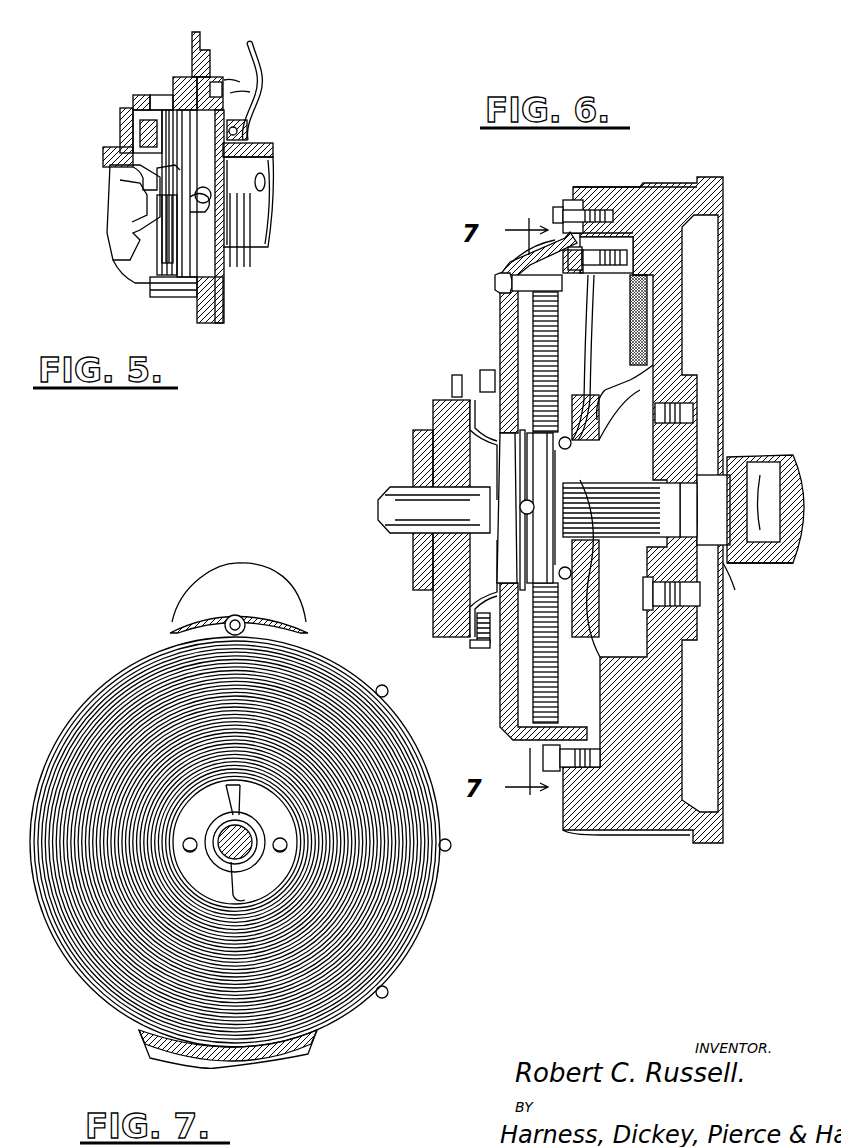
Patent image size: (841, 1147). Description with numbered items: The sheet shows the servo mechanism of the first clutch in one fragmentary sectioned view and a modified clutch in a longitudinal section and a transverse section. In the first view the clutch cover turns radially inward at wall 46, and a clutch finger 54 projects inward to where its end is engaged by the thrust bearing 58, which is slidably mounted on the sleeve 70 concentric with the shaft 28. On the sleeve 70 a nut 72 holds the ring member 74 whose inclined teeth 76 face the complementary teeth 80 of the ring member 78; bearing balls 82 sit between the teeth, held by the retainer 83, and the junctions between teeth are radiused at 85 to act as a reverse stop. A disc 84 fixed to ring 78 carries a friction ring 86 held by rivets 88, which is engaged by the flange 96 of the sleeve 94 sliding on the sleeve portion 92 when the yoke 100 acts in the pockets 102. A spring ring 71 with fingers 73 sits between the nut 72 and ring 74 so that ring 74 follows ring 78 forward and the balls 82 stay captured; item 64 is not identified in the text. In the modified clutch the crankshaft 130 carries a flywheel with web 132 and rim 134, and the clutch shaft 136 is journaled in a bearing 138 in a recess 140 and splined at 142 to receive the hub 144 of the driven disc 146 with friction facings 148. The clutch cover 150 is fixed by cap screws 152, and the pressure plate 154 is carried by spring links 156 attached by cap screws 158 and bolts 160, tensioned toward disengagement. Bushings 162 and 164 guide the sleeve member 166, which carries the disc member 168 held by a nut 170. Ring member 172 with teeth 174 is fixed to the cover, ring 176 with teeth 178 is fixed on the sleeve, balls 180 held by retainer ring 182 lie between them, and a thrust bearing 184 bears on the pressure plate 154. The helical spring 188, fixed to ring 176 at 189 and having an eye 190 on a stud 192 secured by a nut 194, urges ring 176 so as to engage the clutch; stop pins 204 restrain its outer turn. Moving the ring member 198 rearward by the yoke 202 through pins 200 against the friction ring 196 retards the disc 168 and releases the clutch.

In FIG. 5, the shaft 28 is at (264, 183).
In FIG. 5, the radially inward wall of clutch cover 46 is at (192, 43).
In FIG. 5, the clutch finger 54 is at (260, 50).
In FIG. 5, the thrust bearing 58 is at (240, 137).
In FIG. 5, the pin 64 is at (227, 80).
In FIG. 5, the sleeve 70 is at (260, 150).
In FIG. 5, the spring ring 71 is at (117, 152).
In FIG. 5, the nut 72 is at (143, 130).
In FIG. 5, the spring fingers 73 is at (163, 110).
In FIG. 5, the ring member 74 is at (190, 113).
In FIG. 5, the inclined teeth 76 is at (160, 160).
In FIG. 5, the ring member 78 is at (211, 127).
In FIG. 5, the inclined teeth 80 is at (207, 233).
In FIG. 5, the bearing balls 82 is at (210, 187).
In FIG. 5, the retainer 83 is at (197, 285).
In FIG. 5, the disc 84 is at (223, 305).
In FIG. 5, the radiused portion 85 is at (190, 207).
In FIG. 5, the friction ring 86 is at (217, 83).
In FIG. 5, the rivets 88 is at (230, 93).
In FIG. 5, the sleeve portion 92 is at (123, 115).
In FIG. 5, the sleeve 94 is at (140, 100).
In FIG. 5, the flange 96 is at (193, 67).
In FIG. 5, the yoke 100 is at (123, 237).
In FIG. 5, the pockets 102 is at (127, 207).
In FIG. 6, the engine crankshaft 130 is at (763, 465).
In FIG. 6, the flywheel web 132 is at (668, 333).
In FIG. 6, the flywheel rim 134 is at (617, 187).
In FIG. 6, the clutch shaft 136 is at (383, 500).
In FIG. 7, the clutch shaft 136 is at (258, 855).
In FIG. 6, the bearing 138 is at (713, 483).
In FIG. 6, the recess 140 is at (745, 518).
In FIG. 6, the splines 142 is at (724, 567).
In FIG. 6, the hub 144 is at (673, 443).
In FIG. 6, the clutch driven disc 146 is at (640, 380).
In FIG. 6, the friction facings 148 is at (645, 312).
In FIG. 6, the clutch cover 150 is at (505, 322).
In FIG. 7, the clutch cover 150 is at (200, 578).
In FIG. 6, the cap screws 152 is at (563, 223).
In FIG. 6, the pressure plate 154 is at (630, 280).
In FIG. 6, the spring straps or links 156 is at (590, 272).
In FIG. 6, the cap screws 158 is at (560, 227).
In FIG. 6, the bolts 160 is at (610, 768).
In FIG. 6, the bushing 162 is at (432, 497).
In FIG. 6, the bushing 164 is at (600, 572).
In FIG. 6, the sleeve member 166 is at (432, 513).
In FIG. 7, the sleeve member 166 is at (262, 835).
In FIG. 6, the disc member 168 is at (455, 398).
In FIG. 6, the nut 170 is at (443, 432).
In FIG. 6, the ring member 172 is at (508, 508).
In FIG. 6, the inclined teeth 174 is at (512, 510).
In FIG. 6, the ring 176 is at (541, 508).
In FIG. 7, the ring 176 is at (244, 800).
In FIG. 6, the inclined teeth 178 is at (538, 510).
In FIG. 6, the balls 180 is at (552, 508).
In FIG. 7, the balls 180 is at (190, 838).
In FIG. 6, the retainer ring 182 is at (544, 507).
In FIG. 6, the thrust bearing 184 is at (578, 395).
In FIG. 6, the helical spring 188 is at (535, 330).
In FIG. 7, the helical spring 188 is at (87, 700).
In FIG. 7, the spring inner end attachment 189 is at (220, 881).
In FIG. 6, the eye 190 is at (520, 268).
In FIG. 7, the eye 190 is at (243, 612).
In FIG. 6, the stud 192 is at (520, 291).
In FIG. 7, the stud 192 is at (250, 620).
In FIG. 6, the nut 194 is at (495, 283).
In FIG. 6, the friction ring 196 is at (460, 385).
In FIG. 6, the ring member 198 is at (480, 378).
In FIG. 6, the pins 200 is at (477, 660).
In FIG. 6, the yoke 202 is at (489, 660).
In FIG. 6, the stop pins 204 is at (388, 690).
In FIG. 7, the stop pins 204 is at (447, 851).